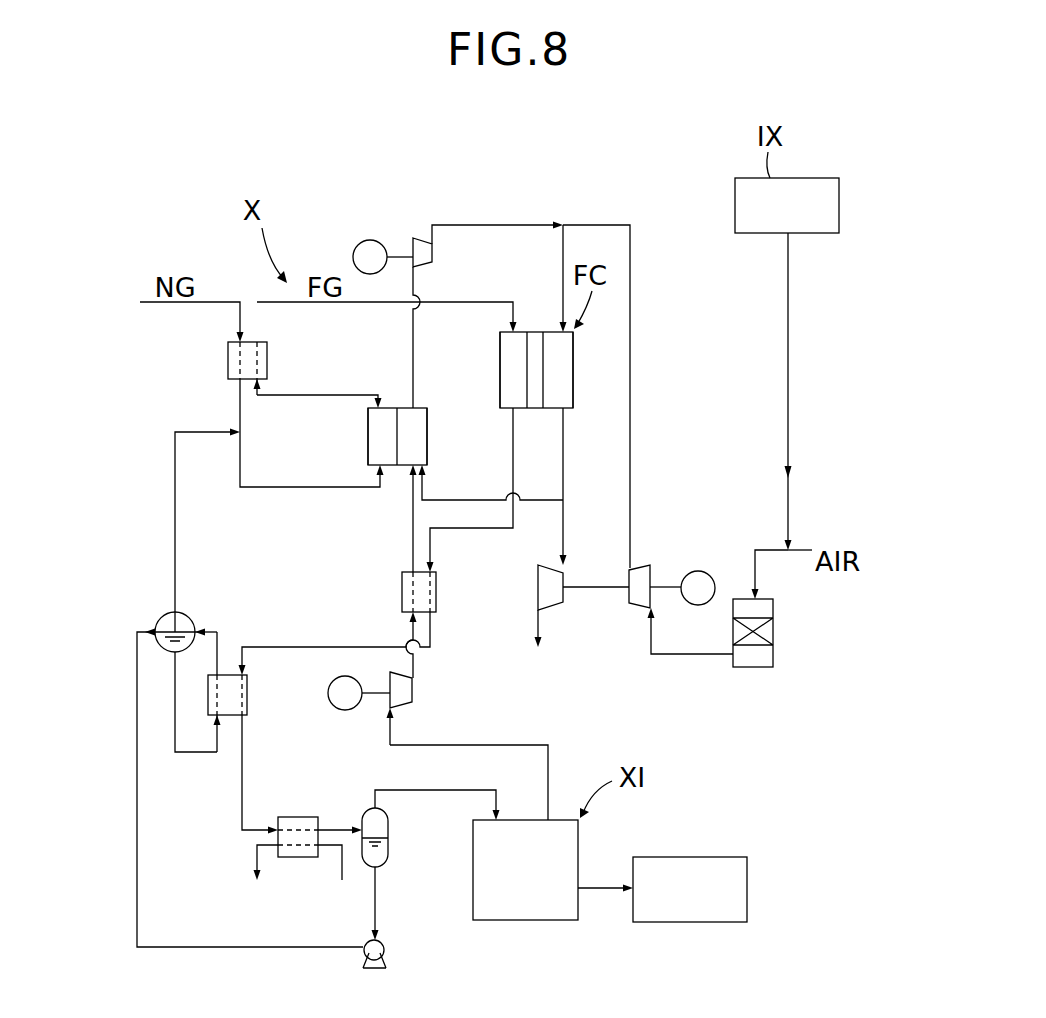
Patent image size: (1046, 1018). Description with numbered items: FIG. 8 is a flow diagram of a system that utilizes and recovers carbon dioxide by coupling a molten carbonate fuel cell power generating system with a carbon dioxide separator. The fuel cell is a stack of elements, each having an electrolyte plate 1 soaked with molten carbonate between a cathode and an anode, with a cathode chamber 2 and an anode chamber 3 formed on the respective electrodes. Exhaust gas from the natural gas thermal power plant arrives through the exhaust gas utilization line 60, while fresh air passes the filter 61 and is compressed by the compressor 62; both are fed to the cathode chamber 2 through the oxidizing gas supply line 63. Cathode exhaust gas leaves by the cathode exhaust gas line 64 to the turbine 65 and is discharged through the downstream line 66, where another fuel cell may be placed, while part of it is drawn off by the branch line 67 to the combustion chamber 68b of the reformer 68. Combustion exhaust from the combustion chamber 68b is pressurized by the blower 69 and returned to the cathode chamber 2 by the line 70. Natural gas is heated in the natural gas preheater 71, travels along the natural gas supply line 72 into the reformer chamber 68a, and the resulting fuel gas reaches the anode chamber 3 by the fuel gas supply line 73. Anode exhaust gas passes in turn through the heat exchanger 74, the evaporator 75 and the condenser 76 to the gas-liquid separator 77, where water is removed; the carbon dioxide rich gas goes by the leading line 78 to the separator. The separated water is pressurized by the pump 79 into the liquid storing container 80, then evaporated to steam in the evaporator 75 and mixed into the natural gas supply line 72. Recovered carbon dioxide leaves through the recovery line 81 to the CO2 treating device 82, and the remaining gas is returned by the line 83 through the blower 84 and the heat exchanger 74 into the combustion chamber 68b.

The electrolyte plate 1 is at (535, 332).
The cathode chamber 2 is at (573, 358).
The anode chamber 3 is at (500, 360).
The exhaust gas utilization line 60 is at (788, 338).
The filter 61 is at (773, 625).
The compressor 62 is at (649, 567).
The oxidizing gas supply line 63 is at (630, 310).
The cathode exhaust gas line 64 is at (563, 478).
The turbine 65 is at (537, 592).
The downstream line 66 is at (543, 621).
The branch line 67 is at (473, 500).
The reformer 68 is at (393, 401).
The reformer chamber 68a is at (368, 440).
The combustion chamber 68b is at (428, 413).
The blower 69 is at (415, 240).
The line 70 is at (482, 225).
The natural gas preheater 71 is at (228, 358).
The natural gas supply line 72 is at (290, 487).
The fuel gas supply line 73 is at (307, 395).
The heat exchanger 74 is at (402, 592).
The evaporator 75 is at (247, 690).
The condenser 76 is at (292, 817).
The gas-liquid separator 77 is at (362, 817).
The leading line 78 is at (387, 787).
The pump 79 is at (364, 945).
The liquid storing container 80 is at (190, 620).
The recovery line 81 is at (607, 890).
The CO2 treating device 82 is at (728, 857).
The line 83 is at (533, 745).
The blower 84 is at (414, 690).